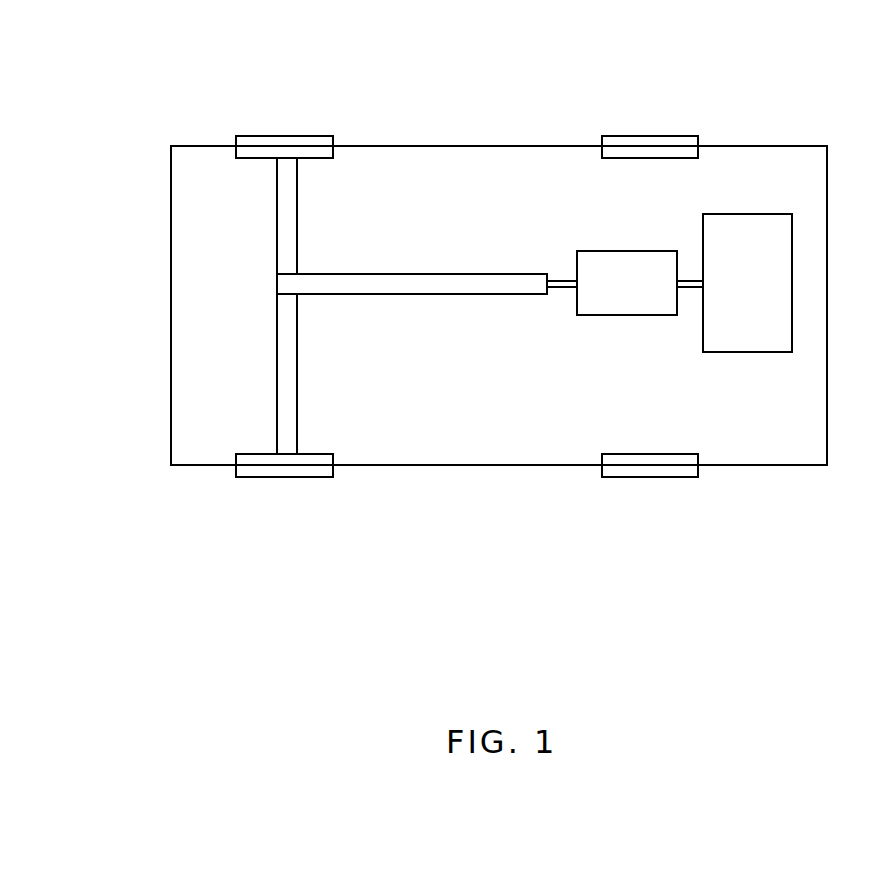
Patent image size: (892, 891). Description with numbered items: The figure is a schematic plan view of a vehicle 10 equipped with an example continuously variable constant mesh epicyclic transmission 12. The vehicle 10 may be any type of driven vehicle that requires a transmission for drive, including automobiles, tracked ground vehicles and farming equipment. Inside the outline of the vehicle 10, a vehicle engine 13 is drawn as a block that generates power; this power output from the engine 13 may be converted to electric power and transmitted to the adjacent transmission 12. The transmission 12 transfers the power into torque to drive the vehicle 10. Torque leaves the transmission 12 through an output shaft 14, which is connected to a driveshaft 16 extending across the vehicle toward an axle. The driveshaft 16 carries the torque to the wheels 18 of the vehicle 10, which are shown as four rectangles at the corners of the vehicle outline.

The vehicle 10 is at (140, 260).
The continuously variable constant mesh epicyclic transmission 12 is at (627, 307).
The vehicle engine 13 is at (738, 342).
The output shaft 14 is at (562, 288).
The driveshaft 16 is at (412, 288).
The wheels 18 is at (292, 140).